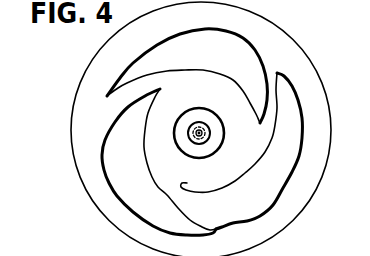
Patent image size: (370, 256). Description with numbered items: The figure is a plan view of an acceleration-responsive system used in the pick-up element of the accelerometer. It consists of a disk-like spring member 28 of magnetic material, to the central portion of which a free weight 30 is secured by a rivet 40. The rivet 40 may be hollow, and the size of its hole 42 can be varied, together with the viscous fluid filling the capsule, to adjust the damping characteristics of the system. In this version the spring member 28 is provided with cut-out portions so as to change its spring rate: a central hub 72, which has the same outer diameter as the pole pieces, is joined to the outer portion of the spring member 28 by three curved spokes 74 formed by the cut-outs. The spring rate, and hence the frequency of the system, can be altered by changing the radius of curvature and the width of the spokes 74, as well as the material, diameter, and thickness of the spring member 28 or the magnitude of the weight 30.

The spring member 28 is at (297, 46).
The free weight 30 is at (211, 109).
The rivet 40 is at (210, 137).
The hole 42 is at (199, 136).
The hub 72 is at (203, 71).
The spokes 74 is at (276, 124).